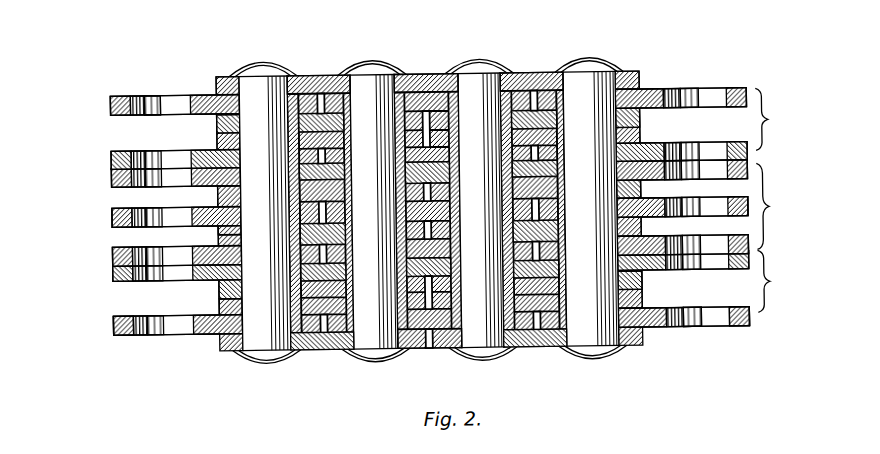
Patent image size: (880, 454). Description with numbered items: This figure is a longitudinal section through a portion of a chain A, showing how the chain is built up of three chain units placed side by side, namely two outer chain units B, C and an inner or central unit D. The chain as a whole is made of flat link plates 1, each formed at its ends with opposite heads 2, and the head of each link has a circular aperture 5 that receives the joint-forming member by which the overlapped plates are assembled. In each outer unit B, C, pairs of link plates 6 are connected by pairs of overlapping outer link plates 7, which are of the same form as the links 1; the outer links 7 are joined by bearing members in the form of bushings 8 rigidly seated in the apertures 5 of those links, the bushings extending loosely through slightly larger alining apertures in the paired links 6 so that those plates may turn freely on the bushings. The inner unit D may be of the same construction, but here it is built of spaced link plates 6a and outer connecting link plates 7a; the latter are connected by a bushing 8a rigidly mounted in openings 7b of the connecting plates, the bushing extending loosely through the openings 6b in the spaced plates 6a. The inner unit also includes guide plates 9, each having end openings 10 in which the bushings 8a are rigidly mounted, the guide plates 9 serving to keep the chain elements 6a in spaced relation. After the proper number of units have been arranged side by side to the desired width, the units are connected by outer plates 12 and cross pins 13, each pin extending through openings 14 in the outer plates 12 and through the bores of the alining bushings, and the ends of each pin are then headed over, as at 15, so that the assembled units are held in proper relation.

The flat link plate 1 is at (190, 92).
The head 2 is at (126, 331).
The circular aperture 5 is at (134, 92).
The link plate 6 is at (216, 124).
The spaced link plate 6a is at (216, 192).
The opening 6b is at (241, 170).
The outer link plate 7 is at (112, 102).
The outer connecting link plate 7a is at (112, 172).
The opening 7b is at (216, 142).
The bushing 8 is at (241, 130).
The bushing 8a is at (241, 201).
The guide plate 9 is at (112, 211).
The end opening 10 is at (160, 222).
The outer plate 12 is at (333, 74).
The cross pin 13 is at (262, 74).
The opening 14 is at (250, 71).
The headed-over end 15 is at (276, 64).
The chain section A is at (426, 52).
The outer chain unit B is at (771, 119).
The outer chain unit C is at (776, 281).
The inner chain unit D is at (775, 206).